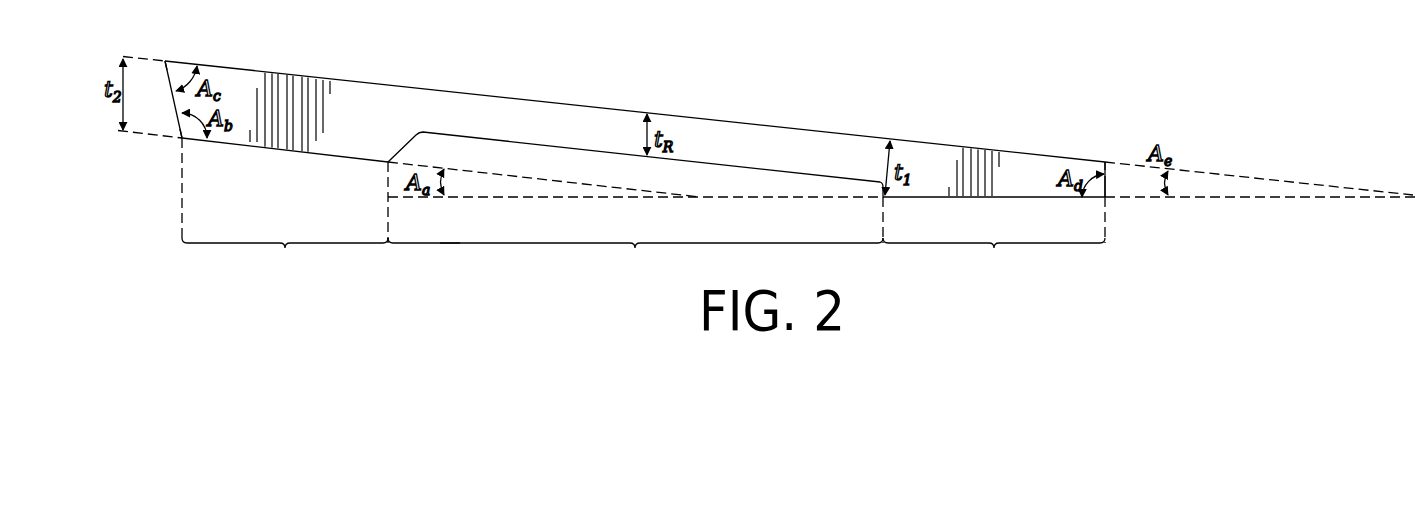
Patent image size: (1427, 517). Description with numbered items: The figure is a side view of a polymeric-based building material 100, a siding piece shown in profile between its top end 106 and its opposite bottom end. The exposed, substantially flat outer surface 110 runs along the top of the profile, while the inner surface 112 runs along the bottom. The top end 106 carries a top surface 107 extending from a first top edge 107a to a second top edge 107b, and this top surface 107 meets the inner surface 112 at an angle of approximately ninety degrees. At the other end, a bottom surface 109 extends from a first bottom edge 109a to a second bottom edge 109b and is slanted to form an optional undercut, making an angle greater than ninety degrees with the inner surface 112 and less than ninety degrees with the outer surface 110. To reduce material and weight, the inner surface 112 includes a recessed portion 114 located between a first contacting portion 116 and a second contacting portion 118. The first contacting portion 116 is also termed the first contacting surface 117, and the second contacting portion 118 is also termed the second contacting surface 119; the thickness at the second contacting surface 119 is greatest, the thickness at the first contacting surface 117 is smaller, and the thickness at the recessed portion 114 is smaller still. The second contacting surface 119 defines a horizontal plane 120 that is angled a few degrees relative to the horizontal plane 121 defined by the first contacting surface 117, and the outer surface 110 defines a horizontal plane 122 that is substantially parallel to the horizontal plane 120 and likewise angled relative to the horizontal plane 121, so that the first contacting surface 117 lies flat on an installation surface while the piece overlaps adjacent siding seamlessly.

The polymeric-based building material 100 is at (759, 155).
The top end 106 is at (1126, 195).
The top surface 107 is at (1108, 183).
The first top edge 107a is at (1105, 162).
The second top edge 107b is at (1107, 198).
The bottom surface 109 is at (168, 115).
The first bottom edge 109a is at (166, 61).
The second bottom edge 109b is at (182, 139).
The outer surface 110 is at (520, 61).
The inner surface 112 is at (450, 255).
The recessed portion 114 is at (635, 258).
The first contacting portion 116 is at (994, 237).
The first contacting surface 117 is at (1010, 198).
The second contacting portion 118 is at (285, 207).
The second contacting surface 119 is at (227, 143).
The horizontal plane 120 is at (539, 174).
The horizontal plane 121 is at (758, 200).
The horizontal plane 122 is at (1270, 180).